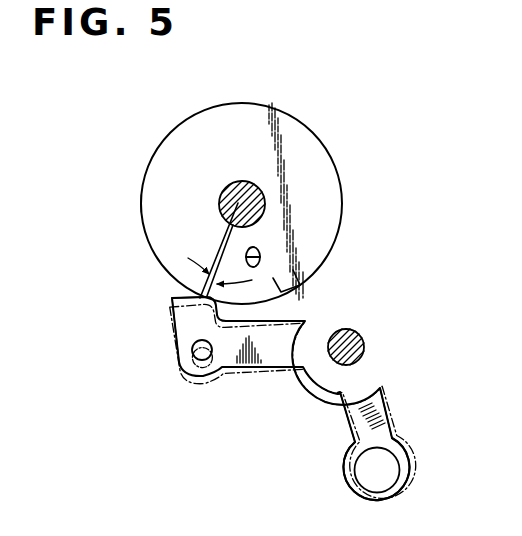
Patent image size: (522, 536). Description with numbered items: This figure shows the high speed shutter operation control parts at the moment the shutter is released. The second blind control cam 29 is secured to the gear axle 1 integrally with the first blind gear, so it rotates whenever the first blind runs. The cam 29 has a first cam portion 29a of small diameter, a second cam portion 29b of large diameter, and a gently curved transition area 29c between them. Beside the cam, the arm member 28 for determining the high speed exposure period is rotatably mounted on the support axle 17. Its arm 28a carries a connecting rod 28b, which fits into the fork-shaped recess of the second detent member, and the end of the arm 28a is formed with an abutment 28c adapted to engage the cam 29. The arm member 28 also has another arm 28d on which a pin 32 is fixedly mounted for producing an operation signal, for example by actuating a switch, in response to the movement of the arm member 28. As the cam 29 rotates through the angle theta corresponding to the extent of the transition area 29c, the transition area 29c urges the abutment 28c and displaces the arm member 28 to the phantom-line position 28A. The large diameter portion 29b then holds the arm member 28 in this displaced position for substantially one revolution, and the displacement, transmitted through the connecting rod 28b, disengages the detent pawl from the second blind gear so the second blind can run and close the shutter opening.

The gear axle 1 is at (221, 194).
The second blind control cam 29 is at (323, 170).
The first cam portion 29a is at (248, 290).
The second cam portion 29b is at (138, 210).
The transition area 29c is at (199, 290).
The arm member 28 is at (389, 363).
The displaced position of arm member 28A is at (236, 375).
The arm 28a is at (183, 352).
The connecting rod 28b is at (196, 355).
The abutment 28c is at (197, 309).
The another arm 28d is at (351, 441).
The support axle 17 is at (361, 331).
The pin 32 is at (389, 479).